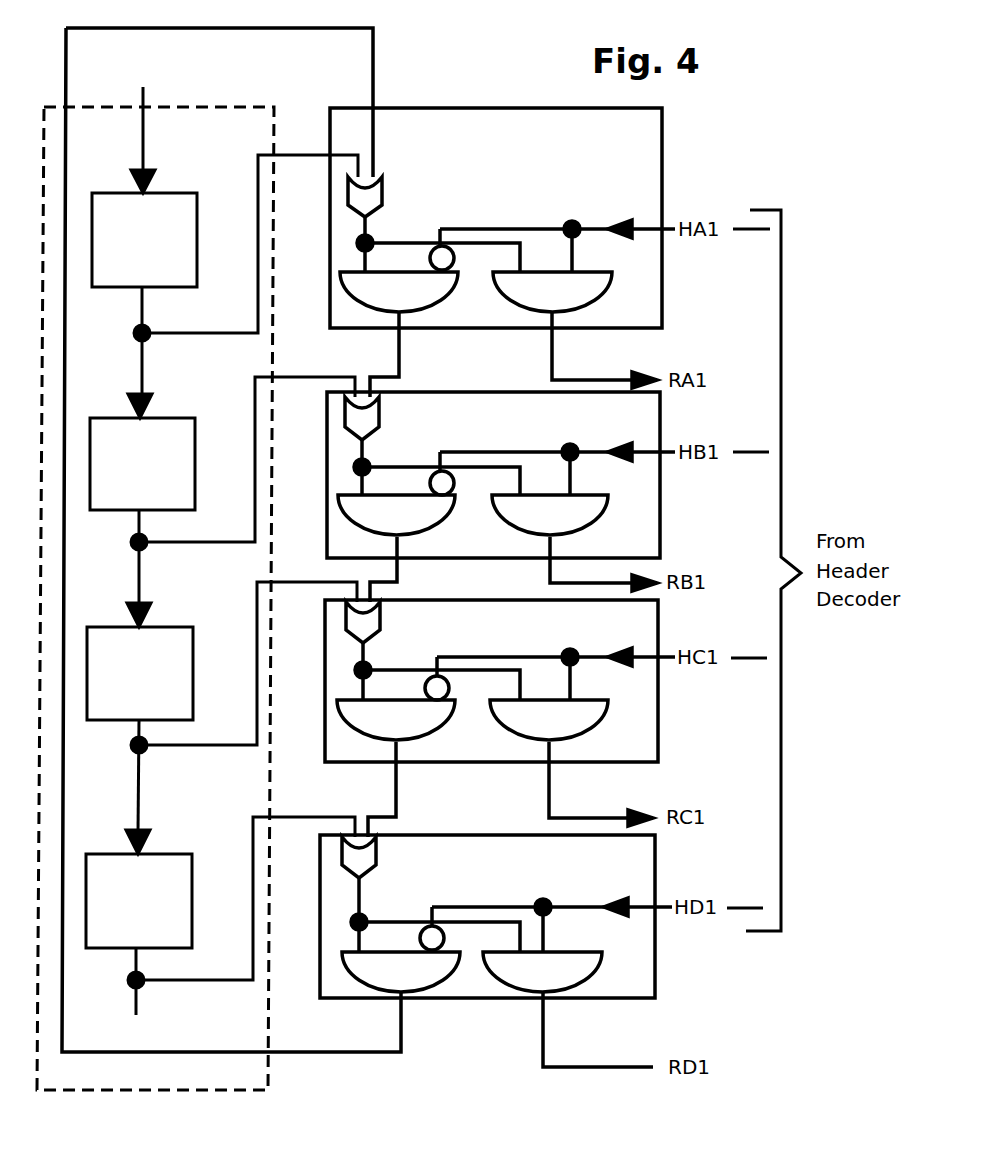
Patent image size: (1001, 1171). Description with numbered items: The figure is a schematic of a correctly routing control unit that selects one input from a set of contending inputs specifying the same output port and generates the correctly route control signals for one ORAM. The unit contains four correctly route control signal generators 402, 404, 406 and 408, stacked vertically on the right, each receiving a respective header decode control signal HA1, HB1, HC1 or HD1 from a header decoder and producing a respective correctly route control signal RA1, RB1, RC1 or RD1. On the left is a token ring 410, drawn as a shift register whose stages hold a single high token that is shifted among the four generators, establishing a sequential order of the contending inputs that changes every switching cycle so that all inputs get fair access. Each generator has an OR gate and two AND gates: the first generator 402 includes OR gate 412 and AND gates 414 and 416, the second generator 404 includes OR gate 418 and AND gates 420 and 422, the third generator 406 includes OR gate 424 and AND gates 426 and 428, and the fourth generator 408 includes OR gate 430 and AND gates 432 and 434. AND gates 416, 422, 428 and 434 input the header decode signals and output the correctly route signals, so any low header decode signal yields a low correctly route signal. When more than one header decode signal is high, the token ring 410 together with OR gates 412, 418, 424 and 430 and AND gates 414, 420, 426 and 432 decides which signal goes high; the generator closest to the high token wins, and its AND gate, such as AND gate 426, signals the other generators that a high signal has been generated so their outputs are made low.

The first correctly route control signal generator 402 is at (663, 135).
The second correctly route control signal generator 404 is at (663, 402).
The third correctly route control signal generator 406 is at (656, 606).
The fourth correctly route control signal generator 408 is at (656, 843).
The token ring 410 is at (198, 101).
The OR gate 412 is at (390, 186).
The AND gate 414 is at (399, 292).
The AND gate 416 is at (552, 292).
The OR gate 418 is at (382, 407).
The AND gate 420 is at (396, 515).
The AND gate 422 is at (550, 515).
The OR gate 424 is at (382, 617).
The AND gate 426 is at (396, 720).
The AND gate 428 is at (549, 720).
The OR gate 430 is at (375, 852).
The AND gate 432 is at (401, 972).
The AND gate 434 is at (542, 972).